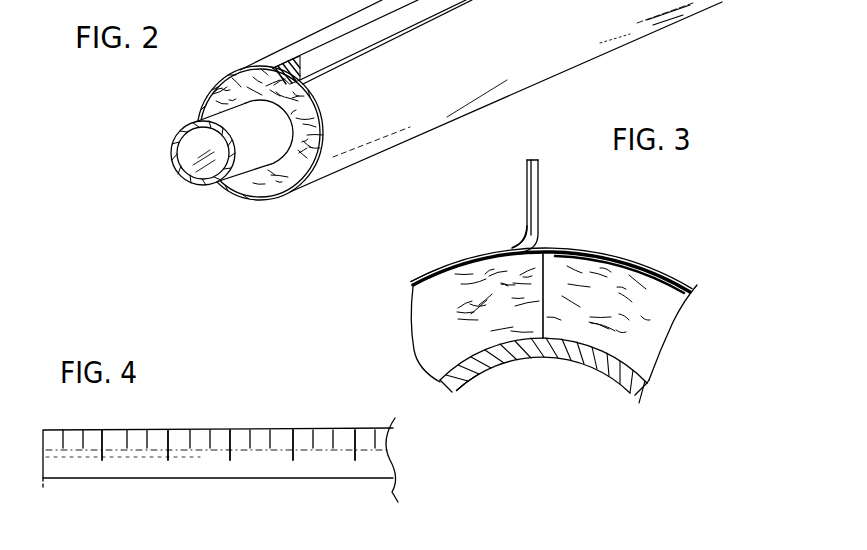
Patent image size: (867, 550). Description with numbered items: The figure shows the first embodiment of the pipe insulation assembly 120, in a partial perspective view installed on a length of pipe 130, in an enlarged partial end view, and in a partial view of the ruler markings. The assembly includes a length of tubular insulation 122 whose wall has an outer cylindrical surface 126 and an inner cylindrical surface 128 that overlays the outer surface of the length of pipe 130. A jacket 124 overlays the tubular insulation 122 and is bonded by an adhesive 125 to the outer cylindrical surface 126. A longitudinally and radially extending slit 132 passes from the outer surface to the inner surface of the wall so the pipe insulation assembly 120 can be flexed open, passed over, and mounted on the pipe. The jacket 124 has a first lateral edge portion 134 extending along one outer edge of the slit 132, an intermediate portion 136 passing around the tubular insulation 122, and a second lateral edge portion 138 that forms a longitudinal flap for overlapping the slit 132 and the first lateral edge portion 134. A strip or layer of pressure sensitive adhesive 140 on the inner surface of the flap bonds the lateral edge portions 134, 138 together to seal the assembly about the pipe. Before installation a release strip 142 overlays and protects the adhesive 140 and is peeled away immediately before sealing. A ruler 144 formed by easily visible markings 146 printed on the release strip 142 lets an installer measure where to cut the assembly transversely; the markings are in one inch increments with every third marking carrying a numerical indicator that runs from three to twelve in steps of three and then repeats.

In FIG. 2, the pipe insulation assembly 120 is at (640, 78).
In FIG. 3, the pipe insulation assembly 120 is at (671, 228).
In FIG. 2, the tubular insulation 122 is at (222, 93).
In FIG. 3, the tubular insulation 122 is at (417, 323).
In FIG. 2, the jacket 124 is at (532, 58).
In FIG. 3, the jacket 124 is at (685, 288).
In FIG. 2, the adhesive 125 is at (296, 189).
In FIG. 3, the adhesive 125 is at (655, 272).
In FIG. 3, the outer cylindrical surface 126 is at (452, 270).
In FIG. 3, the inner cylindrical surface 128 is at (515, 358).
In FIG. 2, the length of pipe 130 is at (172, 166).
In FIG. 3, the length of pipe 130 is at (458, 382).
In FIG. 2, the slit 132 is at (314, 98).
In FIG. 3, the slit 132 is at (545, 300).
In FIG. 3, the first lateral edge portion 134 is at (597, 251).
In FIG. 2, the intermediate portion 136 is at (513, 96).
In FIG. 3, the second lateral edge portion 138 is at (524, 246).
In FIG. 2, the adhesive 140 is at (273, 74).
In FIG. 3, the adhesive 140 is at (534, 173).
In FIG. 3, the release strip 142 is at (539, 200).
In FIG. 4, the ruler 144 is at (185, 421).
In FIG. 4, the markings 146 is at (102, 447).